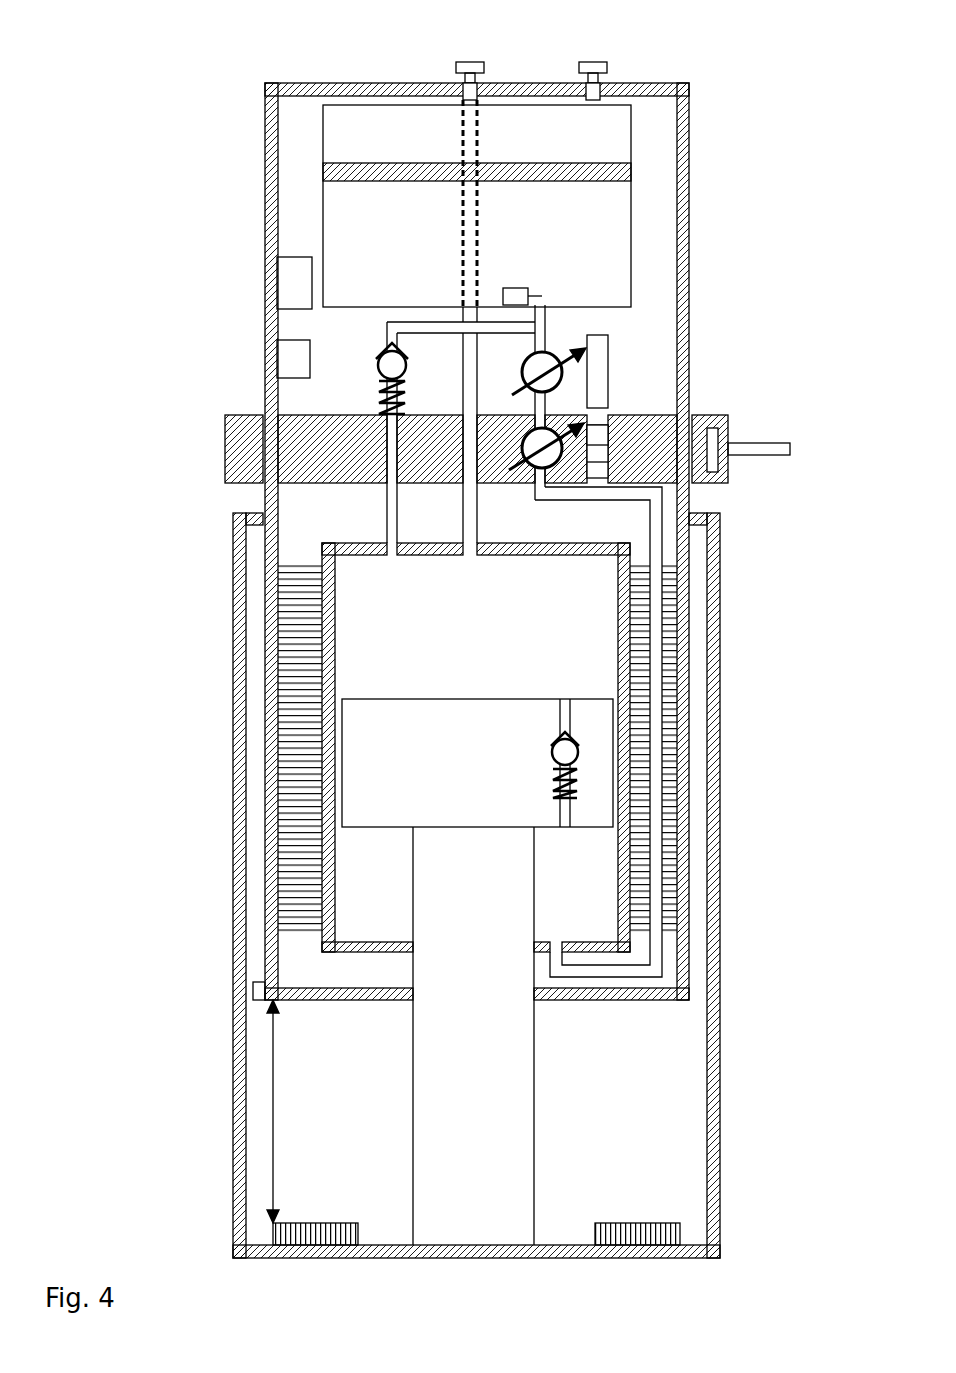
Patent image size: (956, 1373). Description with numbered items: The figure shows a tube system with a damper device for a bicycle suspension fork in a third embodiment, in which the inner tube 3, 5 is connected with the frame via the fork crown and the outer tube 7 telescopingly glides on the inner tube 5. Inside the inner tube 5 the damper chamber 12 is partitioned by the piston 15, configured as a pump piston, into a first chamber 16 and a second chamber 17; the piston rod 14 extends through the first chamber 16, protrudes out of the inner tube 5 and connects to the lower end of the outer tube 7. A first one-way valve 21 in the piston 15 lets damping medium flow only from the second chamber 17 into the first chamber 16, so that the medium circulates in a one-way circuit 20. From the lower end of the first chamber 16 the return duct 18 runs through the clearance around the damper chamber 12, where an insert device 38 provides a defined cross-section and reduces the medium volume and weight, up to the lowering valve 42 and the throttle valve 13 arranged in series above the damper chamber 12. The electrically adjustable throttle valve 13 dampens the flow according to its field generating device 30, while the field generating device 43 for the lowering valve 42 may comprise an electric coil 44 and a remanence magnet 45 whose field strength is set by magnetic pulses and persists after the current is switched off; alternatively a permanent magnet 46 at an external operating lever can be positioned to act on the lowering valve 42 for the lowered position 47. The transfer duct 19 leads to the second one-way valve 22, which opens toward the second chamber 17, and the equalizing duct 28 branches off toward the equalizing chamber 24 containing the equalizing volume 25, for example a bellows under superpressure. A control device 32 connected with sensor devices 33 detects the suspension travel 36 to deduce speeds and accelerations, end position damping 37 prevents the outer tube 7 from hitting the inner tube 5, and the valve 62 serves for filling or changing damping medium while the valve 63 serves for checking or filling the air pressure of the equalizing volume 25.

The inner tube 3 is at (150, 52).
The inner tube 5 is at (690, 226).
The outer tube 7 is at (717, 606).
The damper chamber 12 is at (325, 598).
The throttle valve 13 is at (565, 388).
The piston rod 14 is at (332, 1036).
The piston 15 is at (372, 786).
The first chamber 16 is at (360, 890).
The second chamber 17 is at (340, 662).
The return duct 18 is at (660, 746).
The transfer duct 19 is at (385, 497).
The one-way circuit 20 is at (672, 500).
The first one-way valve 21 is at (553, 750).
The second one-way valve 22 is at (385, 362).
The equalizing chamber 24 is at (325, 120).
The equalizing volume 25 is at (612, 153).
The equalizing duct 28 is at (540, 320).
The field generating device 30 is at (600, 372).
The control device 32 is at (290, 282).
The sensor device 33 is at (510, 284).
The suspension travel 36 is at (276, 1160).
The end position damping 37 is at (285, 1232).
The insert device 38 is at (302, 727).
The lowering valve 42 is at (690, 449).
The field generating device 43 is at (600, 412).
The electric coil 44 is at (540, 489).
The remanence magnet 45 is at (596, 470).
The permanent magnet 46 is at (700, 441).
The lowered position 47 is at (795, 458).
The valve 62 is at (470, 62).
The valve 63 is at (593, 62).